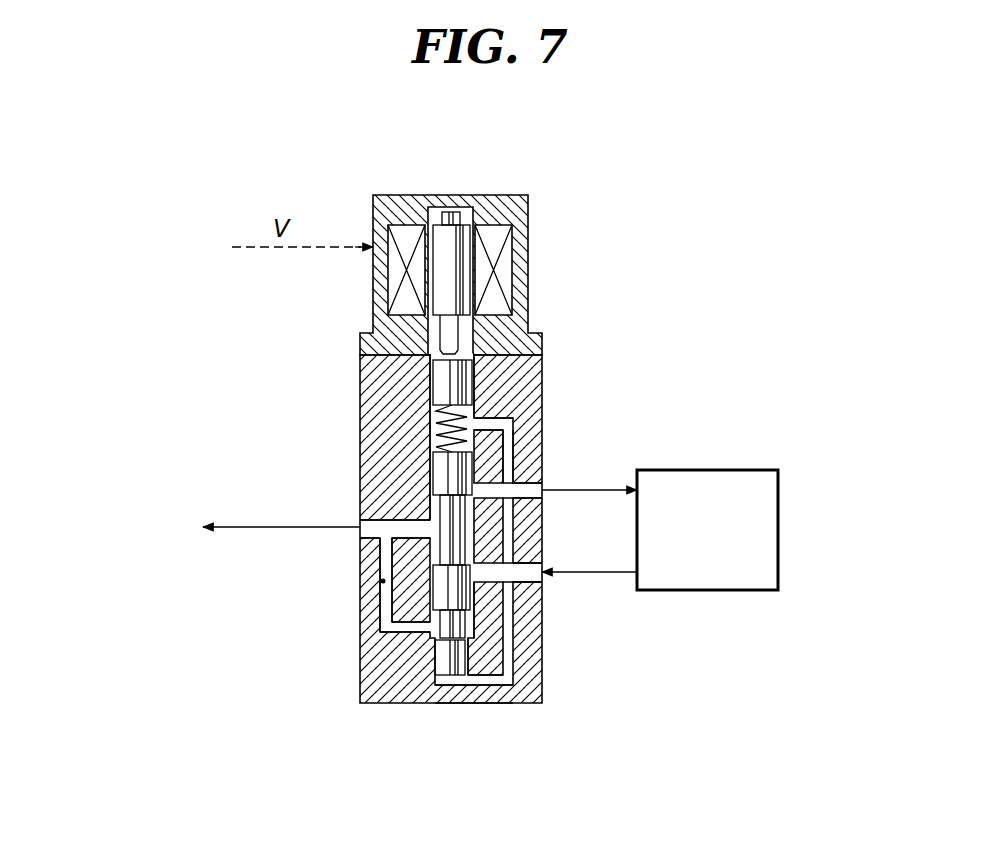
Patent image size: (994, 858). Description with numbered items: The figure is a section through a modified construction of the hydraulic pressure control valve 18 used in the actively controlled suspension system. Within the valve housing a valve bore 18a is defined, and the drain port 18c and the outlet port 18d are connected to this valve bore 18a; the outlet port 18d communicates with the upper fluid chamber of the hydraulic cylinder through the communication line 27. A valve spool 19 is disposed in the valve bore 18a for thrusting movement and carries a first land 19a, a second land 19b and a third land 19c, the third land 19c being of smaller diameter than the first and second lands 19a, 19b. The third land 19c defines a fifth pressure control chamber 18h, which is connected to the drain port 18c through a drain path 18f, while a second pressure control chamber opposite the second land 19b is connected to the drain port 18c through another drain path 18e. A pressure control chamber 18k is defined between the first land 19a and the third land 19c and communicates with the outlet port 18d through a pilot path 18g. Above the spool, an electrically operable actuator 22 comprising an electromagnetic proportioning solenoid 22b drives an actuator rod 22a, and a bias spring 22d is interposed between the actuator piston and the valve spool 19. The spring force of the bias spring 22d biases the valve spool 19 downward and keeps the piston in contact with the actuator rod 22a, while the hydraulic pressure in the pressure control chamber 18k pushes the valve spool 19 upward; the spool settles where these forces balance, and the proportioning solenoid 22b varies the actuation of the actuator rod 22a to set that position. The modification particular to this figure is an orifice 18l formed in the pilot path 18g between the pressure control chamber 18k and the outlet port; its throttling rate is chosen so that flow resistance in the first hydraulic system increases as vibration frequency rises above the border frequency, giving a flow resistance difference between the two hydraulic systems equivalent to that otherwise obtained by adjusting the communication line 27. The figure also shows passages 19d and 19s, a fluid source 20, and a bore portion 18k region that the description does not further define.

The pressure control valve 18 is at (380, 705).
The valve bore 18a is at (440, 414).
The drain port 18c is at (541, 472).
The outlet port 18d is at (404, 530).
The drain path 18e is at (510, 426).
The drain path 18f is at (490, 703).
The pilot path 18g is at (395, 645).
The fifth pressure control chamber 18h is at (453, 684).
The pressure control chamber 18k is at (467, 622).
The orifice 18l is at (380, 580).
The valve spool 19 is at (440, 602).
The first land 19a is at (440, 575).
The second land 19b is at (445, 480).
The third land 19c is at (435, 660).
The supply passage 19d is at (584, 489).
The return passage 19s is at (595, 571).
The fluid source 20 is at (718, 470).
The electrically operable actuator 22 is at (528, 248).
The actuator rod 22a is at (450, 337).
The electromagnetic solenoid 22b is at (490, 240).
The bias spring 22d is at (450, 440).
The communication line 27 is at (258, 526).